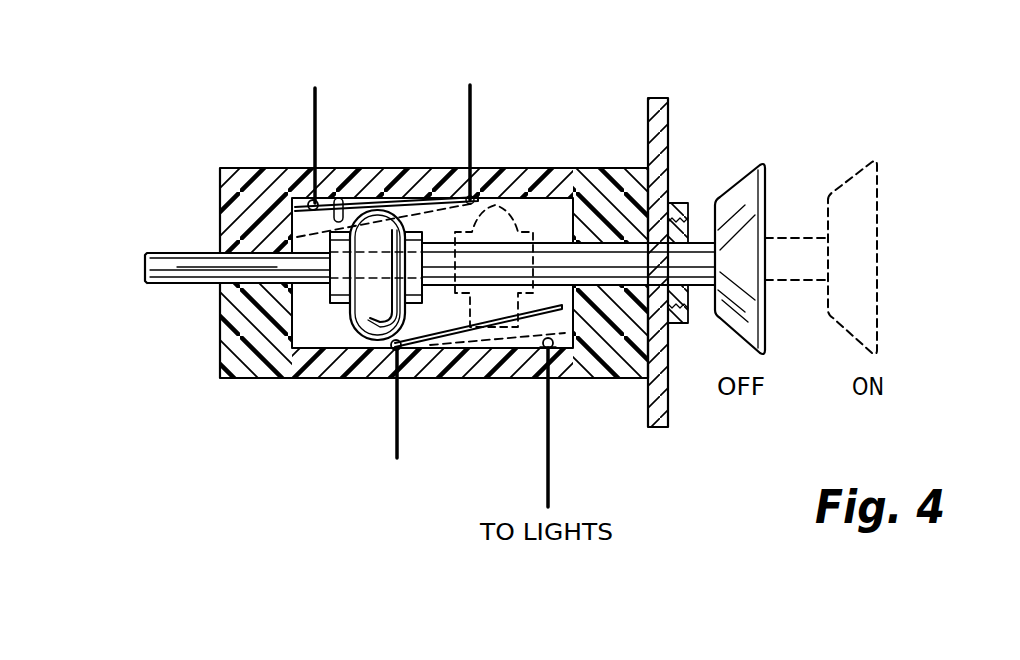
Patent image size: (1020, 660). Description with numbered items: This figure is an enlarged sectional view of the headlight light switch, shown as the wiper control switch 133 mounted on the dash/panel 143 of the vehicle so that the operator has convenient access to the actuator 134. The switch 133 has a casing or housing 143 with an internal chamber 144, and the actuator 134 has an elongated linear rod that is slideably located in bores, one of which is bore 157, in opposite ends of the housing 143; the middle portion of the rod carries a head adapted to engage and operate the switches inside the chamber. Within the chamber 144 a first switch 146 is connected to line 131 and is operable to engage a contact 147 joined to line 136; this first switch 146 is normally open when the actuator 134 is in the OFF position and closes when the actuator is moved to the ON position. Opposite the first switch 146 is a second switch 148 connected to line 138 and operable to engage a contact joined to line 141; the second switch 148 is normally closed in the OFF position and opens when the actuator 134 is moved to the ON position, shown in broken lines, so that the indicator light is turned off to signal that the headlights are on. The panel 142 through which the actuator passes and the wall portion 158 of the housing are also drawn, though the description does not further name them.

The line 131 is at (396, 430).
The wiper control switch 133 is at (265, 96).
The actuator 134 is at (737, 178).
The line 136 is at (548, 443).
The line 138 is at (474, 100).
The line 141 is at (318, 98).
The panel 142 is at (648, 113).
The housing 143 is at (228, 200).
The internal chamber 144 is at (307, 335).
The first switch 146 is at (472, 378).
The contact 147 is at (578, 368).
The second switch 148 is at (340, 198).
The bore 157 is at (193, 296).
The bushing wall 158 is at (608, 213).